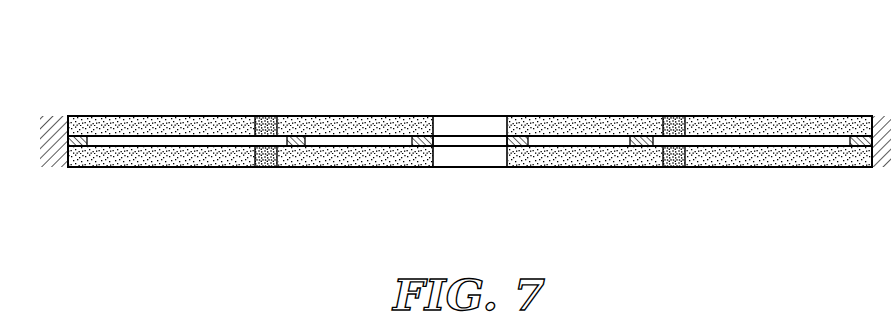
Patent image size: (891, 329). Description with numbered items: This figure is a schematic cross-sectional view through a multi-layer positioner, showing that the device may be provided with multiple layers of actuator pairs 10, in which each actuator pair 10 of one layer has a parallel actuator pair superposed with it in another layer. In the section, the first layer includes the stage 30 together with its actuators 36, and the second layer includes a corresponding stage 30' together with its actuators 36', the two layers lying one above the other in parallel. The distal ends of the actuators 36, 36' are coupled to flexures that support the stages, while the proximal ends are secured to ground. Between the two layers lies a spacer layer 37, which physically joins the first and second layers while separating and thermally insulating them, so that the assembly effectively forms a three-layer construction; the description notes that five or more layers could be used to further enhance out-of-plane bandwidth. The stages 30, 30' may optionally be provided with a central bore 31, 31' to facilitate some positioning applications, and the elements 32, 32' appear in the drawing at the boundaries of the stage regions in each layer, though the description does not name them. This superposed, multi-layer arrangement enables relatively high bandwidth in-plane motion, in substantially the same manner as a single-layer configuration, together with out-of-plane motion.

The actuator pair 10 is at (465, 222).
The stage 30 is at (470, 89).
The stage 30' is at (470, 192).
The central bore 31 is at (470, 89).
The central bore 31' is at (470, 192).
The conductive via column 32 is at (476, 89).
The conductive via column (lower) 32' is at (463, 192).
The actuator 36 is at (470, 89).
The actuator 36' is at (470, 192).
The spacer layer 37 is at (90, 141).